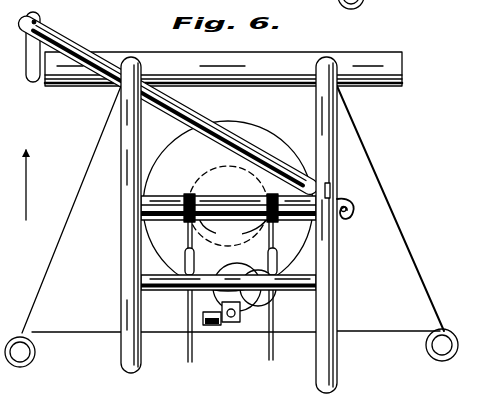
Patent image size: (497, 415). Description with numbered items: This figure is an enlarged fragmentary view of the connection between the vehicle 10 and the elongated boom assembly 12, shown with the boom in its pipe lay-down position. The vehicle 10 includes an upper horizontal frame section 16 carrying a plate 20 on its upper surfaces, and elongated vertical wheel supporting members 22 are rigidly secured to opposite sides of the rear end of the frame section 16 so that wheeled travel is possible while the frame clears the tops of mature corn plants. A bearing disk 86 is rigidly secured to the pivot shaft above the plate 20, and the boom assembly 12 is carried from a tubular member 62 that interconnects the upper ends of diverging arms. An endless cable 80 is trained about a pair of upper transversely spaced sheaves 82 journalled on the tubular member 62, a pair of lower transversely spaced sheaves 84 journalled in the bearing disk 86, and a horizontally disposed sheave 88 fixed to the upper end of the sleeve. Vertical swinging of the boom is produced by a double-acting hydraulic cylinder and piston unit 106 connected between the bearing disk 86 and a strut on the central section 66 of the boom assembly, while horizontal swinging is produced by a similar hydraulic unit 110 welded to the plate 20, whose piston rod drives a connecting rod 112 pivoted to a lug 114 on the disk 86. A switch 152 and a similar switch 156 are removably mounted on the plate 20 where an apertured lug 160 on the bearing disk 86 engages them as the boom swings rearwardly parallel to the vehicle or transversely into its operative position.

The vehicle 10 is at (374, 135).
The boom assembly 12 is at (315, 384).
The upper horizontal frame section 16 is at (386, 188).
The plate 20 is at (67, 246).
The vertical wheel supporting members 22 is at (38, 353).
The tubular member 62 is at (219, 198).
The central section 66 is at (338, 276).
The endless cable 80 is at (270, 351).
The upper transversely spaced sheaves 82 is at (233, 231).
The lower transversely spaced sheaves 84 is at (195, 260).
The bearing disk 86 is at (272, 138).
The horizontally disposed sheave 88 is at (200, 181).
The double-acting hydraulic cylinder and piston unit 106 is at (258, 298).
The double-acting hydraulic cylinder and piston unit 110 is at (256, 58).
The connecting rod 112 is at (188, 113).
The lug 114 is at (346, 220).
The switch 152 is at (203, 318).
The switch 156 is at (339, 193).
The apertured lug 160 is at (240, 312).